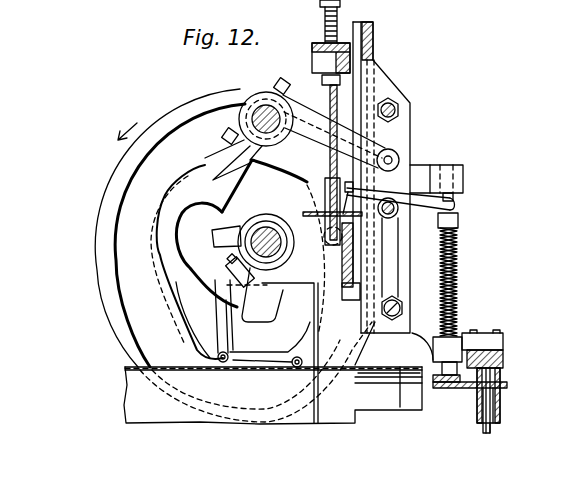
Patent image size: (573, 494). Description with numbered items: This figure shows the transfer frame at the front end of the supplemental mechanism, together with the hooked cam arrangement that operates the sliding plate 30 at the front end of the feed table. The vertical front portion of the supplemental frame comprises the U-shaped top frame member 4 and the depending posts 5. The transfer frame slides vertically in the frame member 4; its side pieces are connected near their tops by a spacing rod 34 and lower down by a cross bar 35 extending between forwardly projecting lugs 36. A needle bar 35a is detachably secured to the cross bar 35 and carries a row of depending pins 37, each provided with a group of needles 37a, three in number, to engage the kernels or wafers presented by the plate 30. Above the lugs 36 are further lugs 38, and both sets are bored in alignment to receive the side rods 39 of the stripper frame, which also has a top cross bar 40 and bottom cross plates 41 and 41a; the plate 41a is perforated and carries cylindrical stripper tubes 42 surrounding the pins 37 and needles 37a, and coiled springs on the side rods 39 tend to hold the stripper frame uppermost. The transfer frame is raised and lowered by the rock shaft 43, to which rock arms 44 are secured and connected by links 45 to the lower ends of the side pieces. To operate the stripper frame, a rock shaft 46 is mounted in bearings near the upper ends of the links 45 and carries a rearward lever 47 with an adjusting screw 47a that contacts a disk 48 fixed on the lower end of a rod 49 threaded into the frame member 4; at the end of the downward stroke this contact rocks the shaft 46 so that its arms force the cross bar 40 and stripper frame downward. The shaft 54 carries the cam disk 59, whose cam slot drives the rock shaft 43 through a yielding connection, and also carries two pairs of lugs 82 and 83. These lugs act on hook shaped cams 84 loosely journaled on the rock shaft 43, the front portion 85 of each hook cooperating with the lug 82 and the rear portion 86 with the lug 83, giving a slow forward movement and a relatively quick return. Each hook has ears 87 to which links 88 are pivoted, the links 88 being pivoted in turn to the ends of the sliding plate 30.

The U-shaped top frame member 4 is at (312, 60).
The rod 49 is at (330, 107).
The rock shaft 43 is at (255, 116).
The spacing rod 34 is at (398, 104).
The adjusting screw 47a is at (350, 186).
The rock arms 44 is at (399, 156).
The lugs 38 is at (463, 165).
The arm or lever 47 is at (368, 196).
The side rods 39 is at (455, 200).
The top cross bar 40 is at (458, 221).
The disk 48 is at (318, 197).
The shaft 54 is at (262, 230).
The lugs 83 is at (213, 241).
The lugs 82 is at (248, 279).
The rear portion of hook cam 86 is at (158, 230).
The cam disk 59 is at (98, 220).
The rock shaft 46 is at (397, 218).
The links 45 is at (390, 267).
The lugs 36 is at (413, 312).
The front portion of hook cam 85 is at (277, 300).
The hook shaped cams 84 is at (220, 300).
The ears 87 is at (228, 335).
The links 88 is at (253, 358).
The depending posts 5 is at (273, 373).
The sliding plate 30 is at (394, 373).
The bottom cross plate 41 is at (436, 395).
The bottom cross plate 41a is at (455, 390).
The cross bar 35 is at (503, 350).
The needle bar 35a is at (503, 362).
The pins 37 is at (500, 392).
The stripper tubes 42 is at (500, 410).
The needles 37a is at (490, 426).